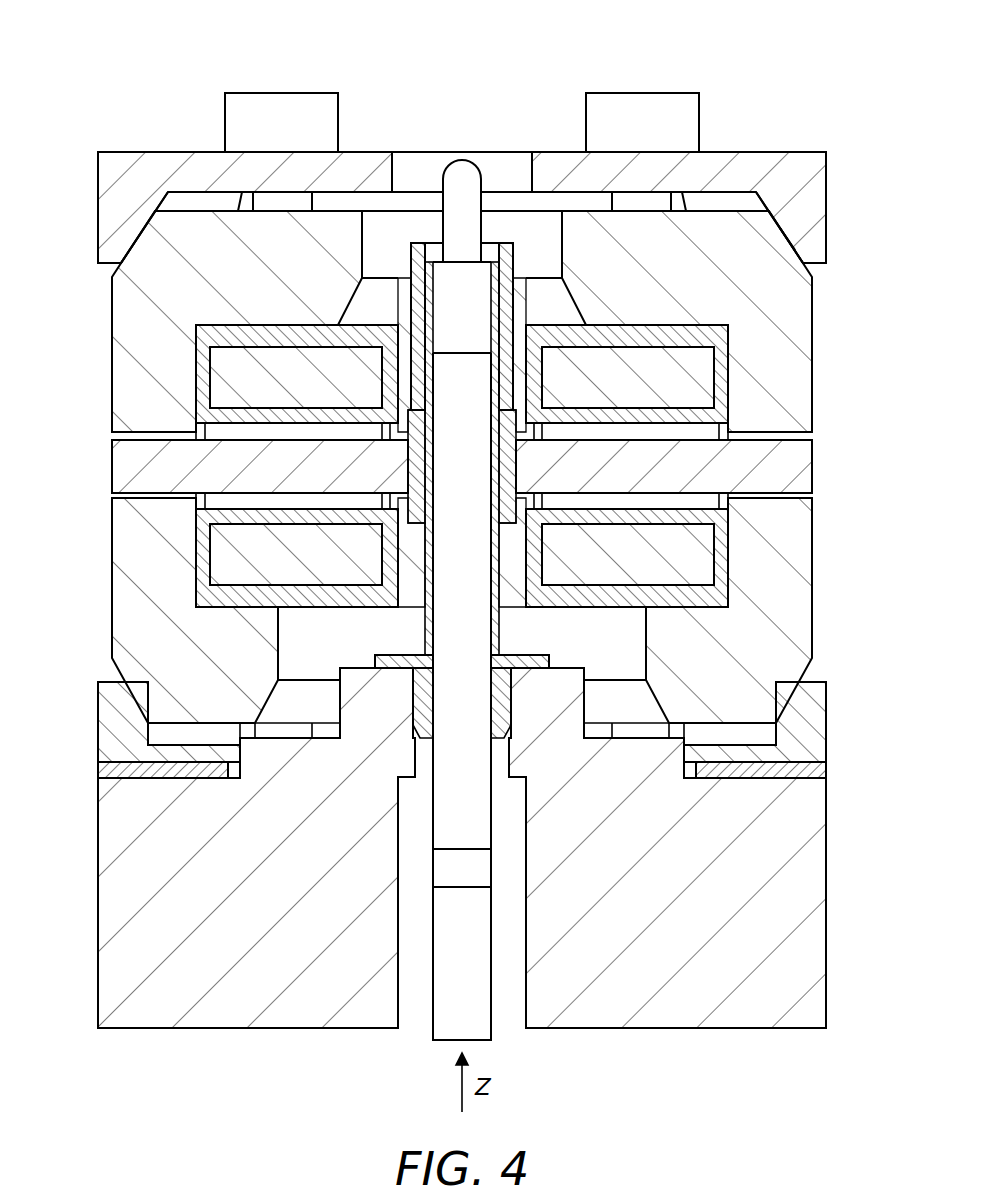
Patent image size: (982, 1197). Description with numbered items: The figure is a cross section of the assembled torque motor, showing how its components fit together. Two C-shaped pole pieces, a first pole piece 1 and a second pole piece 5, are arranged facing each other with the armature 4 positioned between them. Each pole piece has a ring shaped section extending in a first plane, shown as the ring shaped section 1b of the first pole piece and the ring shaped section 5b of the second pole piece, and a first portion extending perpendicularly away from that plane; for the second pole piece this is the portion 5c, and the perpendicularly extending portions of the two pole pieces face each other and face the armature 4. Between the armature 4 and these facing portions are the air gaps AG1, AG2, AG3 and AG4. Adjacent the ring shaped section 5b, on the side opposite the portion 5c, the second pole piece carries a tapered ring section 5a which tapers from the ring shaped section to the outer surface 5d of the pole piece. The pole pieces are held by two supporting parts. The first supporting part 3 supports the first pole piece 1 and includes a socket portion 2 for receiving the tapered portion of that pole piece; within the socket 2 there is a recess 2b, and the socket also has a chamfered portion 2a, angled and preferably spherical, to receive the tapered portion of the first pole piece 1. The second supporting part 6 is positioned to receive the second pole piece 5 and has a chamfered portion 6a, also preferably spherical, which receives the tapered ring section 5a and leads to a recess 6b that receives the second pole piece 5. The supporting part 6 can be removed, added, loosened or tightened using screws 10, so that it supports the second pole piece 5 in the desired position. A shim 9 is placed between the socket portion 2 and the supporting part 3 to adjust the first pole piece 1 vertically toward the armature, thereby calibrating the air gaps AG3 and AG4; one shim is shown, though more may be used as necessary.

The first pole piece 1 is at (805, 556).
The ring shaped section 1b is at (812, 625).
The socket portion 2 is at (815, 730).
The chamfered portion 2a is at (783, 700).
The recess 2b is at (757, 747).
The first supporting part 3 is at (826, 893).
The armature 4 is at (812, 465).
The second pole piece 5 is at (800, 343).
The tapered ring section 5a is at (133, 238).
The ring shaped section 5b is at (112, 300).
The first portion 5c is at (112, 392).
The surface 5d is at (748, 207).
The second supporting part 6 is at (813, 167).
The chamfered portion 6a is at (780, 222).
The recess 6b is at (715, 192).
The shim 9 is at (826, 770).
The screws 10 is at (280, 93).
The air gap AG1 is at (112, 434).
The air gap AG2 is at (812, 436).
The air gap AG3 is at (112, 496).
The air gap AG4 is at (812, 497).